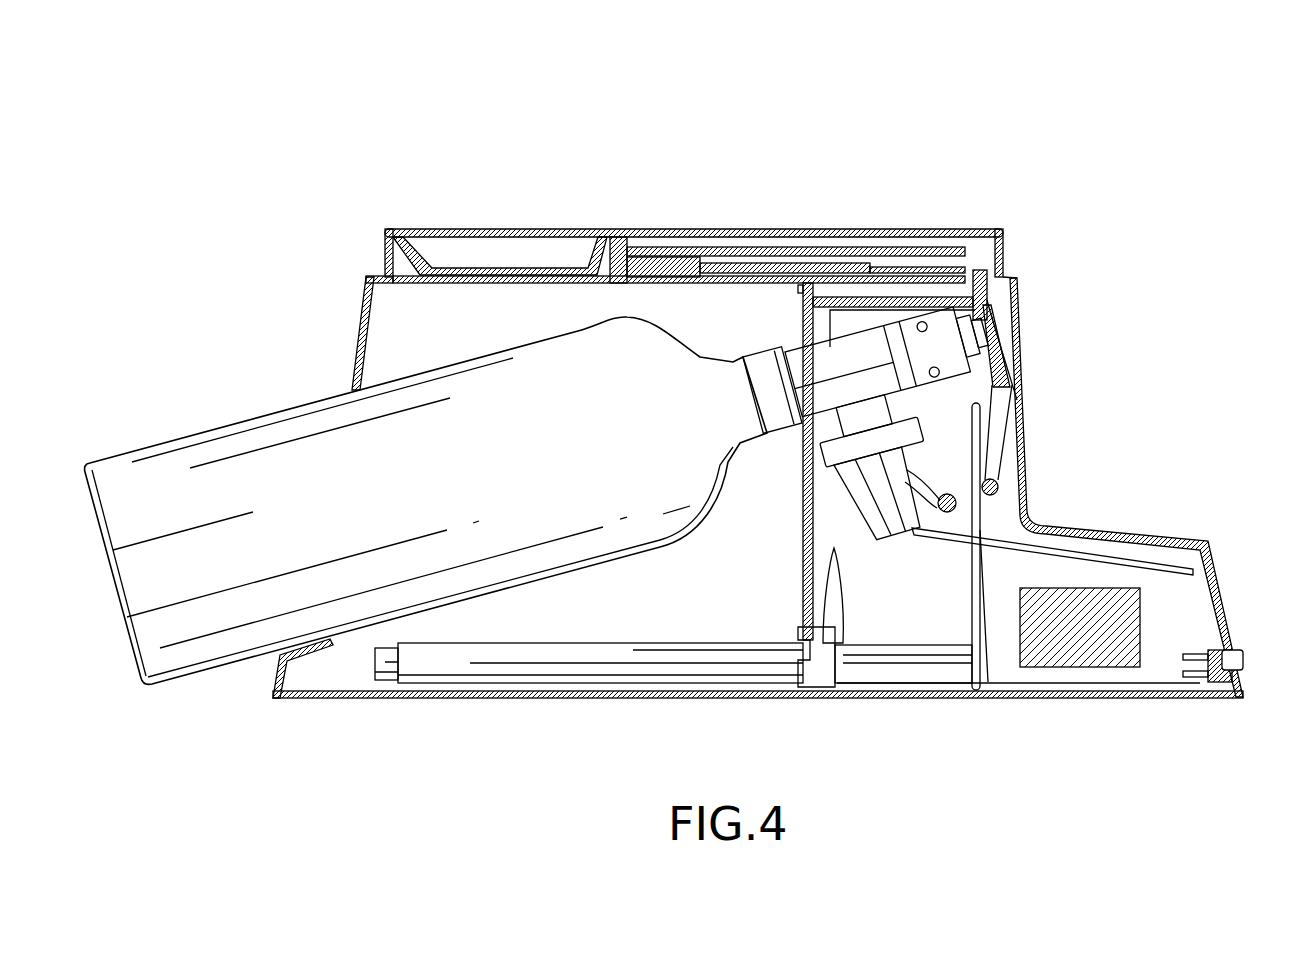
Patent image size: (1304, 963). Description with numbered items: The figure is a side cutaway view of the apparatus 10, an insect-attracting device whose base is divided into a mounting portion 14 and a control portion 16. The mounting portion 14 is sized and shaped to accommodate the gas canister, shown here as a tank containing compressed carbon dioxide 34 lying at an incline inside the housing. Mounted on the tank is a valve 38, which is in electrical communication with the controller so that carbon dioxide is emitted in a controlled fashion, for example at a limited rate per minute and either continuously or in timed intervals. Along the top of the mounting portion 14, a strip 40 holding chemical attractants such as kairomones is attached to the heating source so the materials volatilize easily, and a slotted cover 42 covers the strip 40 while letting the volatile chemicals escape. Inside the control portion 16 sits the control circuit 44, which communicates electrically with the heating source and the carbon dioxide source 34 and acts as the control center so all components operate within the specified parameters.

The apparatus 10 is at (514, 133).
The mounting portion 14 is at (366, 306).
The control portion 16 is at (1222, 599).
The tank containing compressed CO2 34 is at (185, 436).
The valve 38 is at (905, 428).
The strip 40 is at (405, 252).
The cover 42 is at (745, 229).
The control circuit 44 is at (1080, 602).